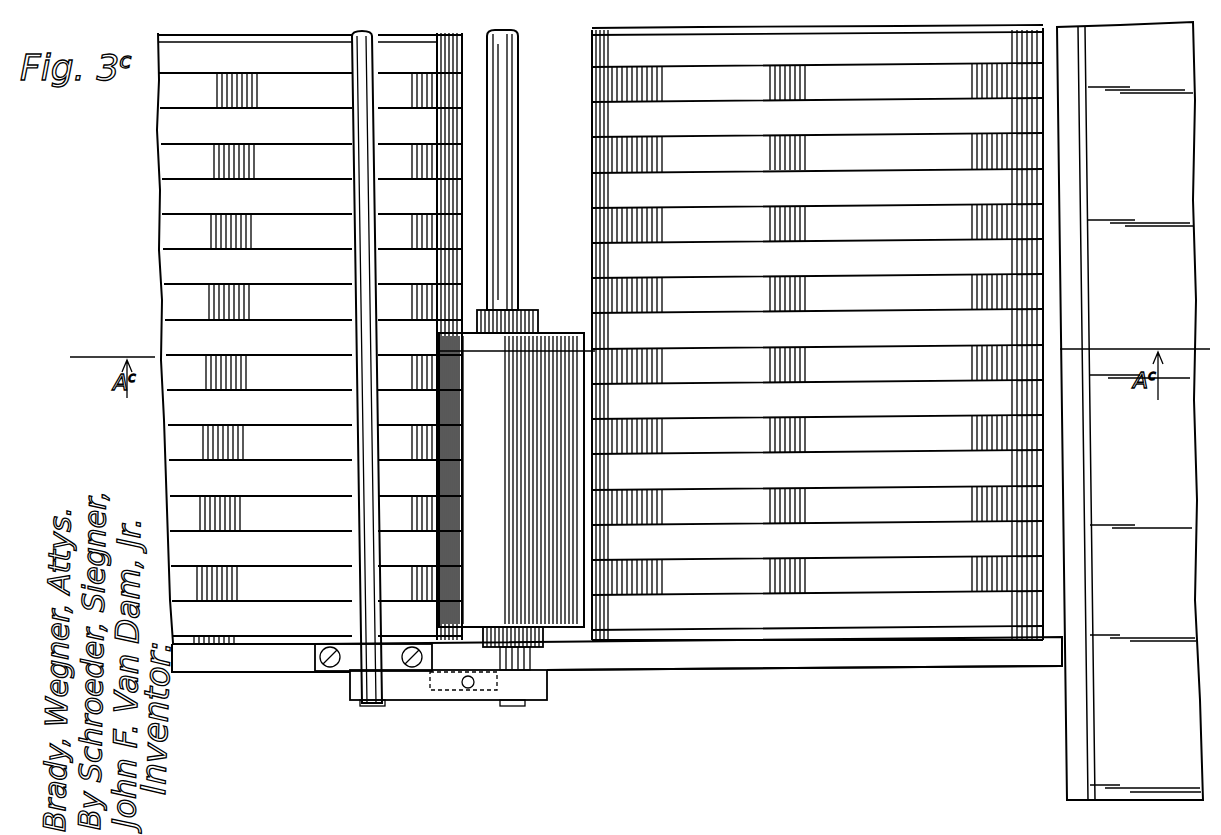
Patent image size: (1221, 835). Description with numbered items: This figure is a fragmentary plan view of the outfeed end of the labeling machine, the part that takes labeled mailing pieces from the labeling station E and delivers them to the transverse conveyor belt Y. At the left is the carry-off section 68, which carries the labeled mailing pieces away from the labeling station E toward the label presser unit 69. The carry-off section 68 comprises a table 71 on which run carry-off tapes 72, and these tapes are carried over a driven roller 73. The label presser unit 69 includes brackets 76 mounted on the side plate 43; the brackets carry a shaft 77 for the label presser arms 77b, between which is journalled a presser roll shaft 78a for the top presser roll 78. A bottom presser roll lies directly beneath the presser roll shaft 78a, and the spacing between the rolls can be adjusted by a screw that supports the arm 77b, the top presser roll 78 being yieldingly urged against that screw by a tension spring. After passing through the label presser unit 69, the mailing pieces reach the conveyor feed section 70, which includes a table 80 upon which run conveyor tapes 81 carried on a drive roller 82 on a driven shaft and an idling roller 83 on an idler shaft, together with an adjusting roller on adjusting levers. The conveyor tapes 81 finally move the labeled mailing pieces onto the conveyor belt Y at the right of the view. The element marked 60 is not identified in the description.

The side plate 43 is at (700, 652).
The inner slats 60 is at (690, 225).
The carry-off section 68 is at (249, 650).
The label presser unit 69 is at (568, 681).
The conveyor feed section 70 is at (850, 646).
The table 71 is at (200, 302).
The carry-off tapes 72 is at (252, 62).
The driven roller 73 is at (440, 232).
The brackets 76 is at (355, 660).
The shaft 77 is at (362, 298).
The label presser arms 77b is at (445, 692).
The top presser roll 78 is at (545, 335).
The presser roll shaft 78a is at (500, 148).
The table 80 is at (474, 690).
The conveyor tapes 81 is at (855, 57).
The drive roller 82 is at (600, 148).
The idling roller 83 is at (1000, 290).
The labeling station E is at (312, 682).
The conveyor belt Y is at (1110, 686).